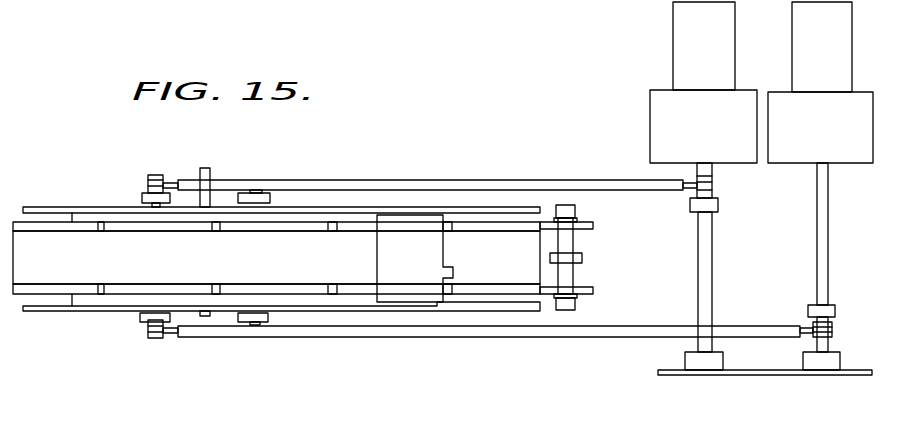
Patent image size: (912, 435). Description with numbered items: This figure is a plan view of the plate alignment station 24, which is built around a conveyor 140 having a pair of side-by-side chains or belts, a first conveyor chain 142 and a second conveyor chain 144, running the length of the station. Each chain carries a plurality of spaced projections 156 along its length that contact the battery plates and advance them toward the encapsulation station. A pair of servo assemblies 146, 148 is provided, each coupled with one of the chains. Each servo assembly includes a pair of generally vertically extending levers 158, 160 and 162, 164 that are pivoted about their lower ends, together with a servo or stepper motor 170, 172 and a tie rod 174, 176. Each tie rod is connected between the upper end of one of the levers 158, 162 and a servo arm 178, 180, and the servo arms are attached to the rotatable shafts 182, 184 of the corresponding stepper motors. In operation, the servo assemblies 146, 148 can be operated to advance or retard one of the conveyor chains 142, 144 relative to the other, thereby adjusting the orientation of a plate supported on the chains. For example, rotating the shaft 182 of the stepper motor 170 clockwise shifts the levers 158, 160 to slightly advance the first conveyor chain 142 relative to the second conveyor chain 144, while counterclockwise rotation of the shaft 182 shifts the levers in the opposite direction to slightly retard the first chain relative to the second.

The plate alignment station 24 is at (408, 163).
The conveyor 140 is at (53, 198).
The first conveyor chain 142 is at (505, 292).
The second conveyor chain 144 is at (512, 227).
The servo assembly 146 is at (810, 267).
The servo assembly 148 is at (692, 245).
The spaced projections 156 is at (333, 231).
The lever 158 is at (143, 317).
The lever 160 is at (270, 317).
The lever 162 is at (143, 197).
The lever 164 is at (265, 195).
The servo or stepper motor 170 is at (797, 153).
The servo or stepper motor 172 is at (657, 103).
The tie rod 174 is at (382, 332).
The tie rod 176 is at (485, 186).
The servo arm 178 is at (835, 310).
The servo arm 180 is at (690, 204).
The rotatable shaft 182 is at (822, 202).
The rotatable shaft 184 is at (705, 290).